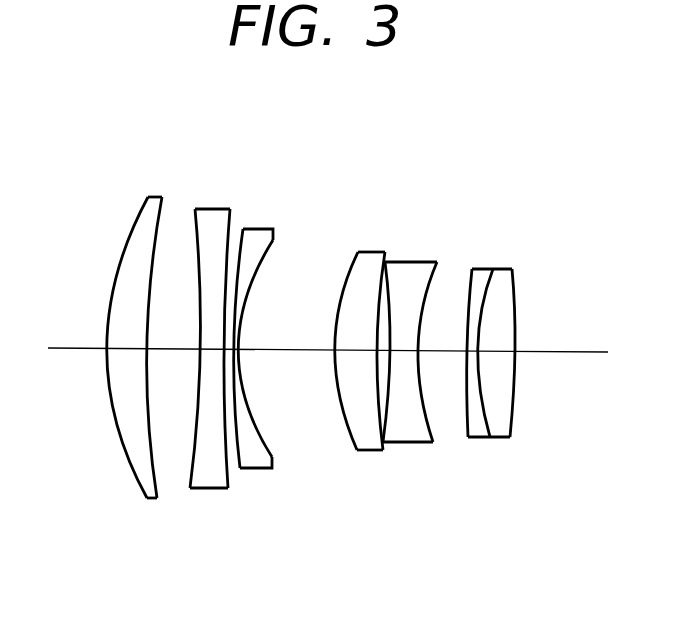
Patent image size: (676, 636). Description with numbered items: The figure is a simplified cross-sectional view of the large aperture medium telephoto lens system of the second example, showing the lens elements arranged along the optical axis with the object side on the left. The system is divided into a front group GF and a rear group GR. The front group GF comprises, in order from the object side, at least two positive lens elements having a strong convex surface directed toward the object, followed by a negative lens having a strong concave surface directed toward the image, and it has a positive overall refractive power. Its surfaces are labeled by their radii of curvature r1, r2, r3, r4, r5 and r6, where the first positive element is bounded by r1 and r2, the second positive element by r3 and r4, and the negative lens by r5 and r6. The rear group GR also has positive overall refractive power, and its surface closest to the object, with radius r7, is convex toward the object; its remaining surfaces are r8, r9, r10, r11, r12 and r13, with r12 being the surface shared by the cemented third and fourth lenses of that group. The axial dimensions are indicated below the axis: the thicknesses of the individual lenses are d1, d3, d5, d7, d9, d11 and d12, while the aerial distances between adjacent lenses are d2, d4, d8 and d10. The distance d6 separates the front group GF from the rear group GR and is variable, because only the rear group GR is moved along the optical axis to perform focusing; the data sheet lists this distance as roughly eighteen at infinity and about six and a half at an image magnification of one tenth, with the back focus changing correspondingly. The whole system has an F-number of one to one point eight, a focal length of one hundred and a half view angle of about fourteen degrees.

The front group GF is at (295, 137).
The rear group GR is at (577, 140).
The radius of curvature of the first lens surface r1 is at (148, 197).
The radius of curvature of the second lens surface r2 is at (162, 197).
The radius of curvature of the third lens surface r3 is at (195, 209).
The radius of curvature of the fourth lens surface r4 is at (230, 209).
The radius of curvature of the fifth lens surface r5 is at (243, 229).
The radius of curvature of the sixth lens surface r6 is at (274, 241).
The radius of curvature of the seventh lens surface r7 is at (360, 252).
The radius of curvature of the eighth lens surface r8 is at (385, 252).
The radius of curvature of the ninth lens surface r9 is at (387, 262).
The radius of curvature of the tenth lens surface r10 is at (437, 262).
The radius of curvature of the eleventh lens surface r11 is at (473, 268).
The radius of curvature of the twelfth lens surface r12 is at (493, 268).
The radius of curvature of the thirteenth lens surface r13 is at (512, 268).
The thickness of the first lens d1 is at (133, 349).
The aerial distance between the first and second lenses d2 is at (148, 349).
The thickness of the second lens d3 is at (182, 349).
The aerial distance between the second and third lenses d4 is at (213, 349).
The thickness of the third lens d5 is at (240, 349).
The variable aerial distance between the front and rear groups d6 is at (285, 349).
The thickness of the fourth lens d7 is at (362, 349).
The aerial distance between the fourth and fifth lenses d8 is at (378, 349).
The thickness of the fifth lens d9 is at (405, 349).
The aerial distance between the fifth and sixth lenses d10 is at (442, 349).
The thickness of the sixth lens d11 is at (480, 349).
The thickness of the seventh lens d12 is at (497, 349).